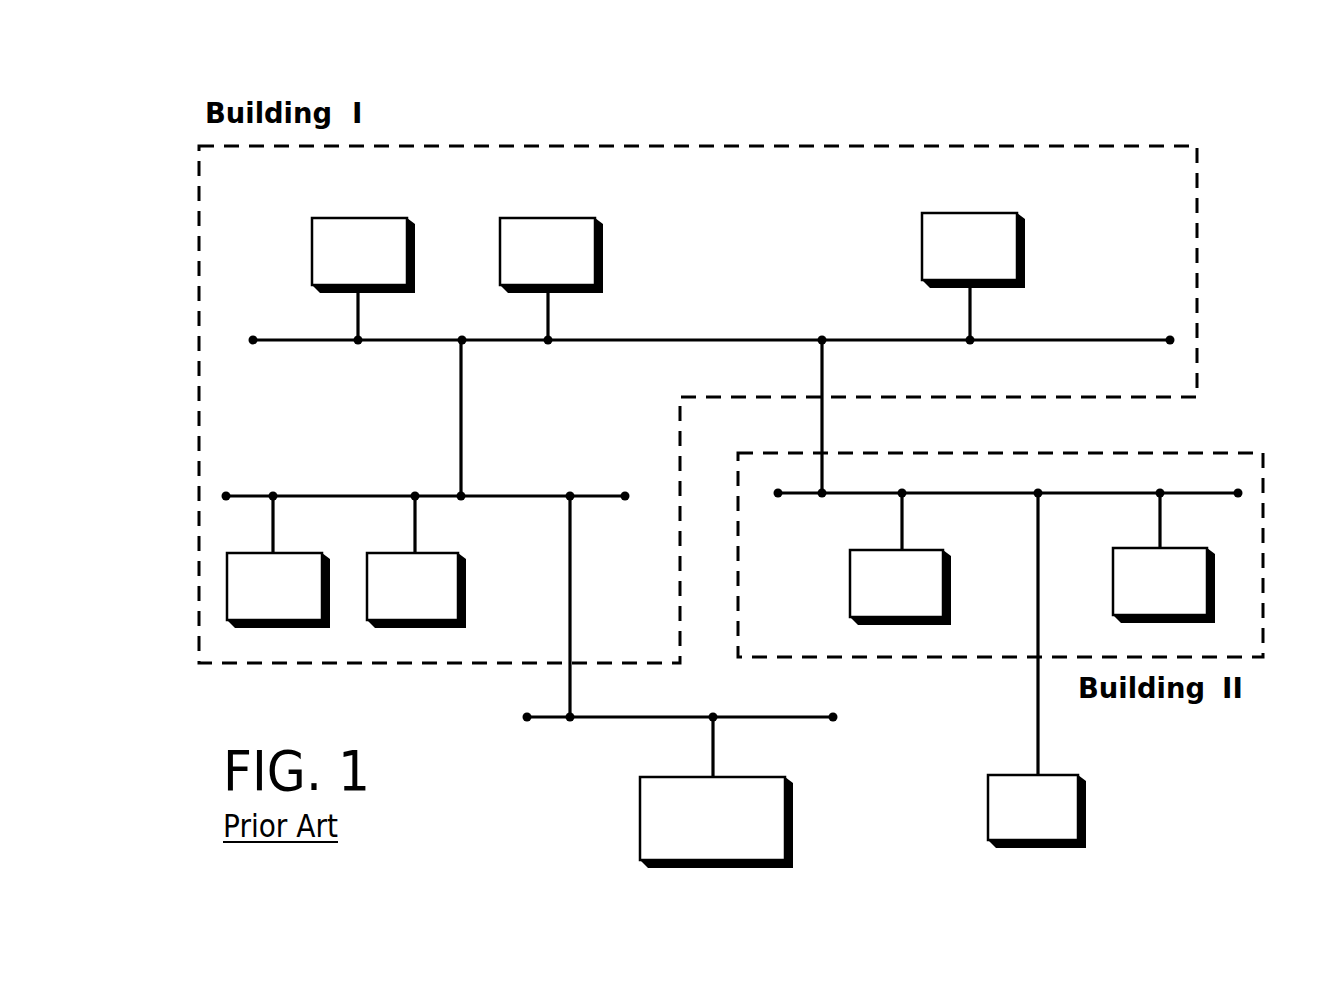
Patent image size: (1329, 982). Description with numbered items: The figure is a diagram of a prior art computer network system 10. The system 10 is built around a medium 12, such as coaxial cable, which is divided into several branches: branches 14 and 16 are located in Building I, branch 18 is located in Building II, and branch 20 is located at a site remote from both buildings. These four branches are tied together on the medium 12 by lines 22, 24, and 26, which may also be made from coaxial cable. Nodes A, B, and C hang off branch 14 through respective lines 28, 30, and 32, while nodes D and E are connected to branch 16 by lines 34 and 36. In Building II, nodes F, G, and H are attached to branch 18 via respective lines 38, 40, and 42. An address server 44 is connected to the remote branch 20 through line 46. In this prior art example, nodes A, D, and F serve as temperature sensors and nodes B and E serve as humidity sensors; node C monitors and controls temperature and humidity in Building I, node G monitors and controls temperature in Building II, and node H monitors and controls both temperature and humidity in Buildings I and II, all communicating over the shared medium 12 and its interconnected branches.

The computer network system 10 is at (1170, 132).
The medium 12 is at (718, 333).
The branch 14 is at (1140, 336).
The branch 16 is at (525, 495).
The branch 18 is at (1004, 493).
The branch 20 is at (607, 722).
The line 22 is at (461, 402).
The line 24 is at (822, 420).
The line 26 is at (570, 553).
The line 28 is at (358, 312).
The line 30 is at (553, 303).
The line 32 is at (970, 303).
The line 34 is at (273, 523).
The line 36 is at (415, 523).
The line 38 is at (902, 517).
The line 40 is at (1160, 520).
The line 42 is at (1038, 737).
The address server 44 is at (653, 840).
The line 46 is at (713, 742).